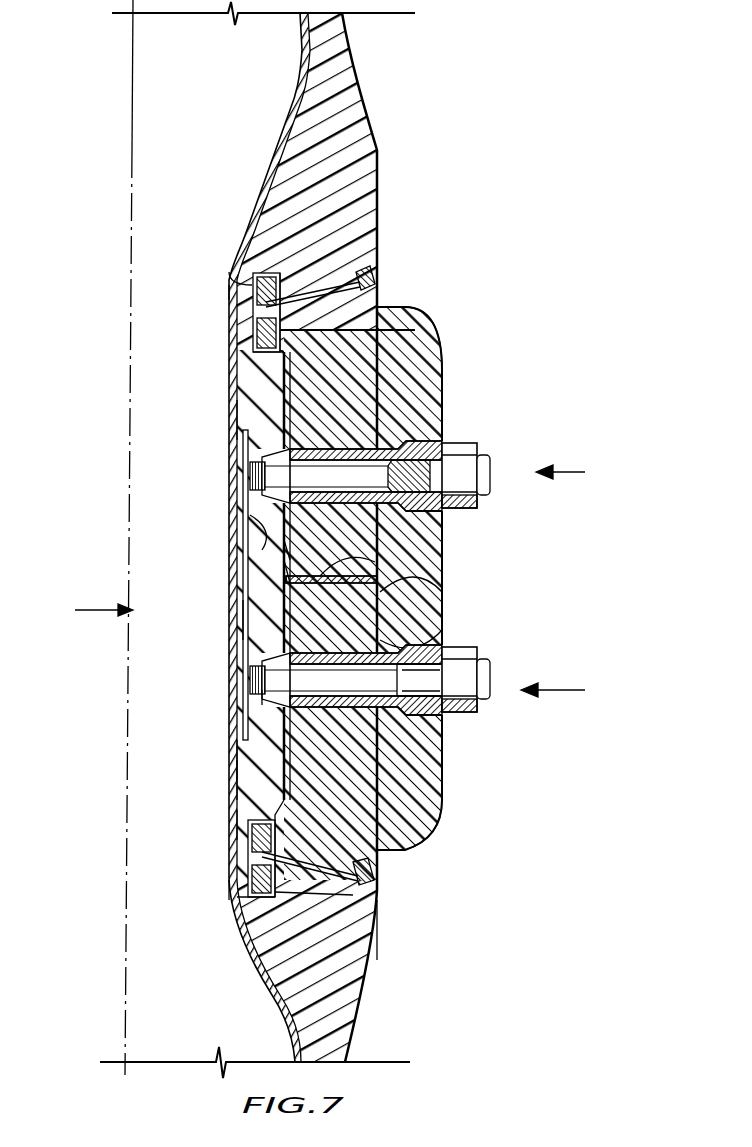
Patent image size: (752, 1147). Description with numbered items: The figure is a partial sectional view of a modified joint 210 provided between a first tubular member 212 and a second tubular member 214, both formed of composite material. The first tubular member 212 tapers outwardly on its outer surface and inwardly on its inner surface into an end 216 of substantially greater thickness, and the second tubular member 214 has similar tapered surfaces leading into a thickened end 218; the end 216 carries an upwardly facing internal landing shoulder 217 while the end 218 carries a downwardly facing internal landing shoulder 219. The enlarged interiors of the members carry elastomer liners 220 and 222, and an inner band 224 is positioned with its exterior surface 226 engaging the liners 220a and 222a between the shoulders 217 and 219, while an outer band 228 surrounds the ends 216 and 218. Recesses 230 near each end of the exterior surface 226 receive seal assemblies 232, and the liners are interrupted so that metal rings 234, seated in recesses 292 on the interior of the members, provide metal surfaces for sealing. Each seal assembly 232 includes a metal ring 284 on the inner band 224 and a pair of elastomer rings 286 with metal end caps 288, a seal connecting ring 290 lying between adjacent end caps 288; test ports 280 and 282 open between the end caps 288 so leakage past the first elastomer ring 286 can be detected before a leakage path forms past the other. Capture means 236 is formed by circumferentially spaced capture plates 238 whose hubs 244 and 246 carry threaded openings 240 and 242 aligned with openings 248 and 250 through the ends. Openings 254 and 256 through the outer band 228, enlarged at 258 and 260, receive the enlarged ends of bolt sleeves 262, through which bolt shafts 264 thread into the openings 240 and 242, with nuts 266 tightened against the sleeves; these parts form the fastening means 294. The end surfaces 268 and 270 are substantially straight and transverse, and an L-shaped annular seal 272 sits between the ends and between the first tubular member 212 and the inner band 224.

The modified joint 210 is at (81, 610).
The first tubular member 212 is at (353, 1030).
The second tubular member 214 is at (352, 52).
The end 216 is at (380, 943).
The internal landing shoulder 217 is at (230, 895).
The end 218 is at (380, 208).
The internal landing shoulder 219 is at (243, 290).
The elastomer liner 220 is at (265, 1003).
The liner 220a is at (237, 823).
The elastomer liner 222 is at (296, 92).
The liner 222a is at (250, 428).
The inner band 224 is at (238, 795).
The exterior surface 226 is at (445, 810).
The outer band 228 is at (444, 773).
The recesses 230 is at (300, 838).
The seal assemblies 232 is at (254, 322).
The metal rings 234 is at (395, 333).
The capture means 236 is at (244, 735).
The capture plates 238 is at (241, 625).
The threaded opening 240 is at (250, 686).
The threaded opening 242 is at (255, 478).
The hub 244 is at (238, 778).
The hub 246 is at (252, 548).
The opening 248 is at (257, 700).
The opening 250 is at (284, 555).
The opening 254 is at (447, 718).
The opening 256 is at (455, 442).
The enlarged portion 258 is at (478, 659).
The enlarged portion 260 is at (446, 512).
The bolt sleeves 262 is at (423, 440).
The bolt shafts 264 is at (282, 452).
The nuts 266 is at (478, 447).
The end surface 268 is at (395, 556).
The end surface 270 is at (420, 605).
The annular seal 272 is at (283, 576).
The port 280 is at (374, 870).
The port 282 is at (340, 280).
The metal ring 284 is at (264, 300).
The elastomer rings 286 is at (264, 310).
The metal end caps 288 is at (352, 894).
The seal connecting ring 290 is at (368, 306).
The recesses 292 is at (247, 362).
The fastening means 294 is at (576, 580).